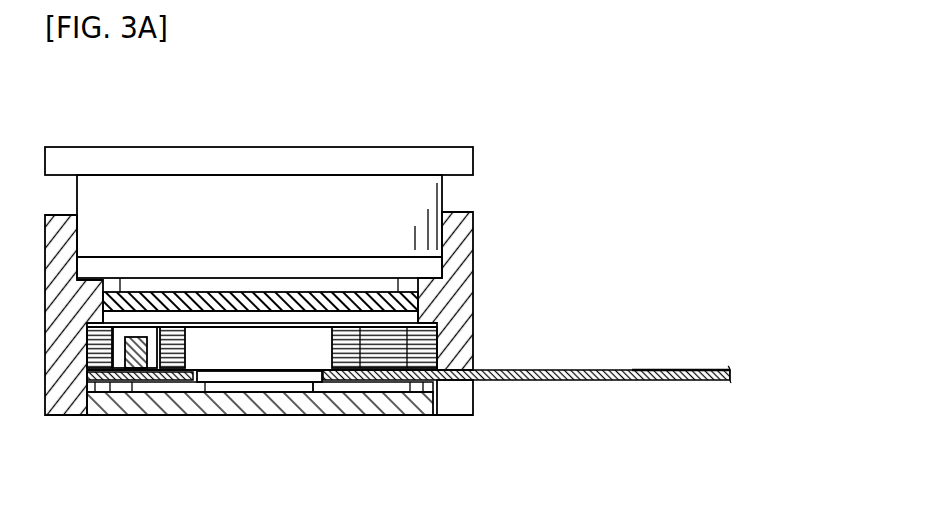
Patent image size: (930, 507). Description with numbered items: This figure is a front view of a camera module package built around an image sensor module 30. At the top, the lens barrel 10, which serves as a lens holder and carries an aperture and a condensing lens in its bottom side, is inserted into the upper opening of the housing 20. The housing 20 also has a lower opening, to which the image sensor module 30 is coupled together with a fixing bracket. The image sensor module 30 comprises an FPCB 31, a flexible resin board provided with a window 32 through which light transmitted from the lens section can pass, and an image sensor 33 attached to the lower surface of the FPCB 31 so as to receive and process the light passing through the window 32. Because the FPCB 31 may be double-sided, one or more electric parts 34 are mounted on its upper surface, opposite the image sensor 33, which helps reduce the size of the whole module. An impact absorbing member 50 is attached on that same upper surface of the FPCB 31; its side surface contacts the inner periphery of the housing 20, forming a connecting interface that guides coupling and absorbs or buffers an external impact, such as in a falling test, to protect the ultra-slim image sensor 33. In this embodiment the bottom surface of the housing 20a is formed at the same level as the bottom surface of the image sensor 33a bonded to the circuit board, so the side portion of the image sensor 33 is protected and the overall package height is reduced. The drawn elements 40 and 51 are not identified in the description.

The lens barrel 10 is at (486, 142).
The housing 20 is at (486, 207).
The bottom surface of the housing 20a is at (473, 415).
The image sensor module 30 is at (300, 432).
The FPCB 31 is at (591, 381).
The window 32 is at (216, 370).
The image sensor 33 is at (259, 395).
The bottom surface of the image sensor 33a is at (390, 415).
The electric parts 34 is at (121, 365).
The magnet plate 40 is at (421, 291).
The impact absorbing member 50 is at (415, 339).
The coil substrate 51 is at (110, 382).